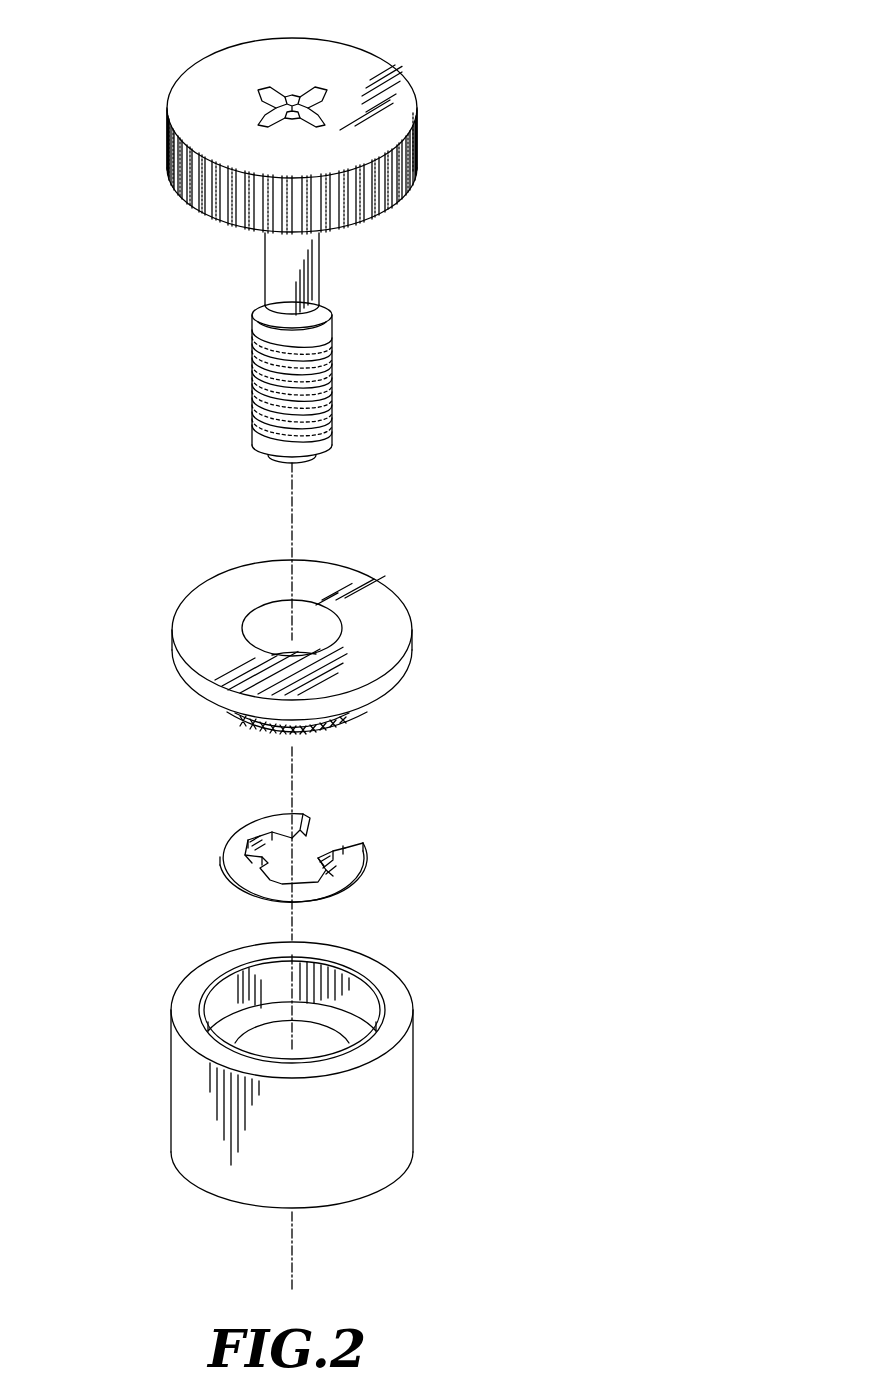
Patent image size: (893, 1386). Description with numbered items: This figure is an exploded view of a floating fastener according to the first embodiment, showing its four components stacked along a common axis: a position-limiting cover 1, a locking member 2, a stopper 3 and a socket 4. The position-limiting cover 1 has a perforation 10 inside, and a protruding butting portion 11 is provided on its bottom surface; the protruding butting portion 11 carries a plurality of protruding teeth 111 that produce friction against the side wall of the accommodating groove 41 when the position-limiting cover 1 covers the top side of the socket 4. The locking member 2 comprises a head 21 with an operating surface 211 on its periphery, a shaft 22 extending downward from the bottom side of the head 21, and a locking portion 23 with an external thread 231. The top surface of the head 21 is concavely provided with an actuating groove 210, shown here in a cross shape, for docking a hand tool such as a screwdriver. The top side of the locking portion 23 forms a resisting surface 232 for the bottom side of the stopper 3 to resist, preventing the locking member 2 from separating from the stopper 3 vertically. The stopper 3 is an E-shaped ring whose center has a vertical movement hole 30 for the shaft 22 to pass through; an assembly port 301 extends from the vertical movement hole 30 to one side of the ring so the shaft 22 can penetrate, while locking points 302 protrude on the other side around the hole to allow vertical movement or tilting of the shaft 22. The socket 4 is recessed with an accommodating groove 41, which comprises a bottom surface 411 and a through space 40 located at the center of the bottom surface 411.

The position-limiting cover 1 is at (420, 643).
The perforation 10 is at (270, 633).
The protruding butting portion 11 is at (437, 740).
The protruding teeth 111 is at (325, 716).
The locking member 2 is at (168, 222).
The head 21 is at (205, 110).
The actuating groove 210 is at (282, 102).
The operating surface 211 is at (402, 165).
The shaft 22 is at (274, 278).
The locking portion 23 is at (418, 400).
The external thread 231 is at (326, 410).
The resisting surface 232 is at (324, 314).
The stopper 3 is at (208, 852).
The vertical movement hole 30 is at (282, 860).
The assembly port 301 is at (318, 838).
The locking points 302 is at (262, 842).
The socket 4 is at (430, 1074).
The through space 40 is at (315, 1045).
The accommodating groove 41 is at (232, 1000).
The bottom surface 411 is at (222, 1033).